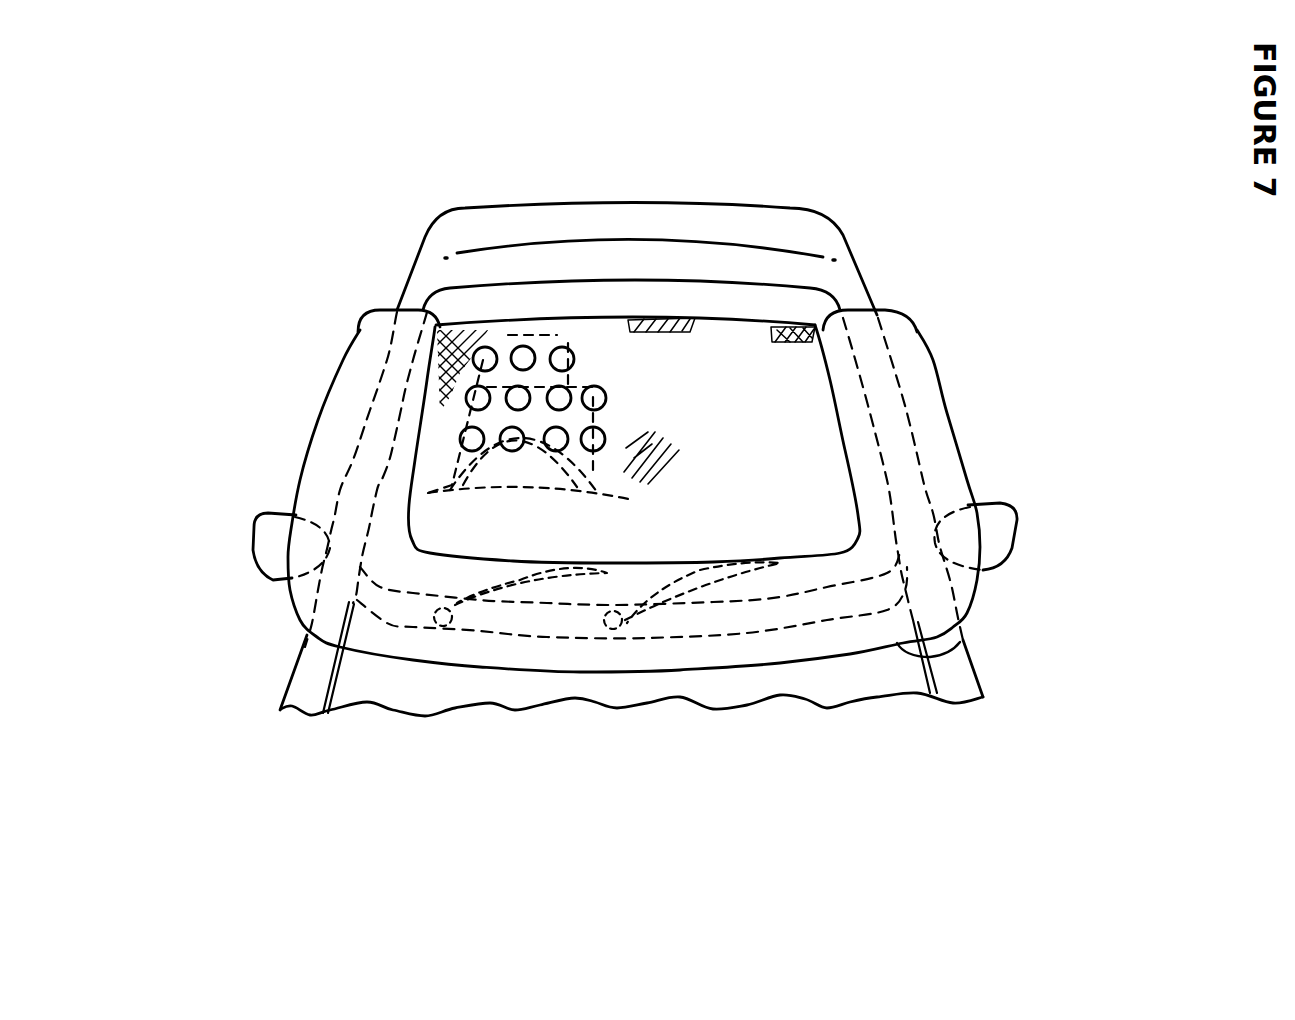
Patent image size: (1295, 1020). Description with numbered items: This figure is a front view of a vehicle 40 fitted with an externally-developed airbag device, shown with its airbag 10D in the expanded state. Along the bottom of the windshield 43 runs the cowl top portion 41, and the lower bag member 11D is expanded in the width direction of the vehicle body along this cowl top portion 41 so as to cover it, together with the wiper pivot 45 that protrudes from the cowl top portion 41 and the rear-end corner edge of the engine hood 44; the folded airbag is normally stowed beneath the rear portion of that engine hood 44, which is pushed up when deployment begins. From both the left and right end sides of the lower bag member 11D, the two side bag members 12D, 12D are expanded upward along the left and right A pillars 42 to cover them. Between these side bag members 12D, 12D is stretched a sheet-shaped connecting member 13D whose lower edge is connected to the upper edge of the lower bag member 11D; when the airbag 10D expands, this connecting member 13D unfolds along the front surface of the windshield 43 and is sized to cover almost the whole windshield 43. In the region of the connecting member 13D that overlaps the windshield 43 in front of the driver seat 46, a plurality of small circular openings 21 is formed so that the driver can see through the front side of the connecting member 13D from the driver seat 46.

The vehicle 40 is at (762, 197).
The windshield 43 is at (497, 296).
The driver seat 46 is at (542, 343).
The connecting member 13D is at (772, 327).
The side bag member 12D is at (365, 333).
The A pillar 42 is at (347, 460).
The small circular openings 21 is at (573, 355).
The airbag 10D is at (277, 607).
The lower bag member 11D is at (960, 640).
The wiper pivot 45 is at (440, 627).
The engine hood 44 is at (560, 690).
The cowl top portion 41 is at (847, 607).